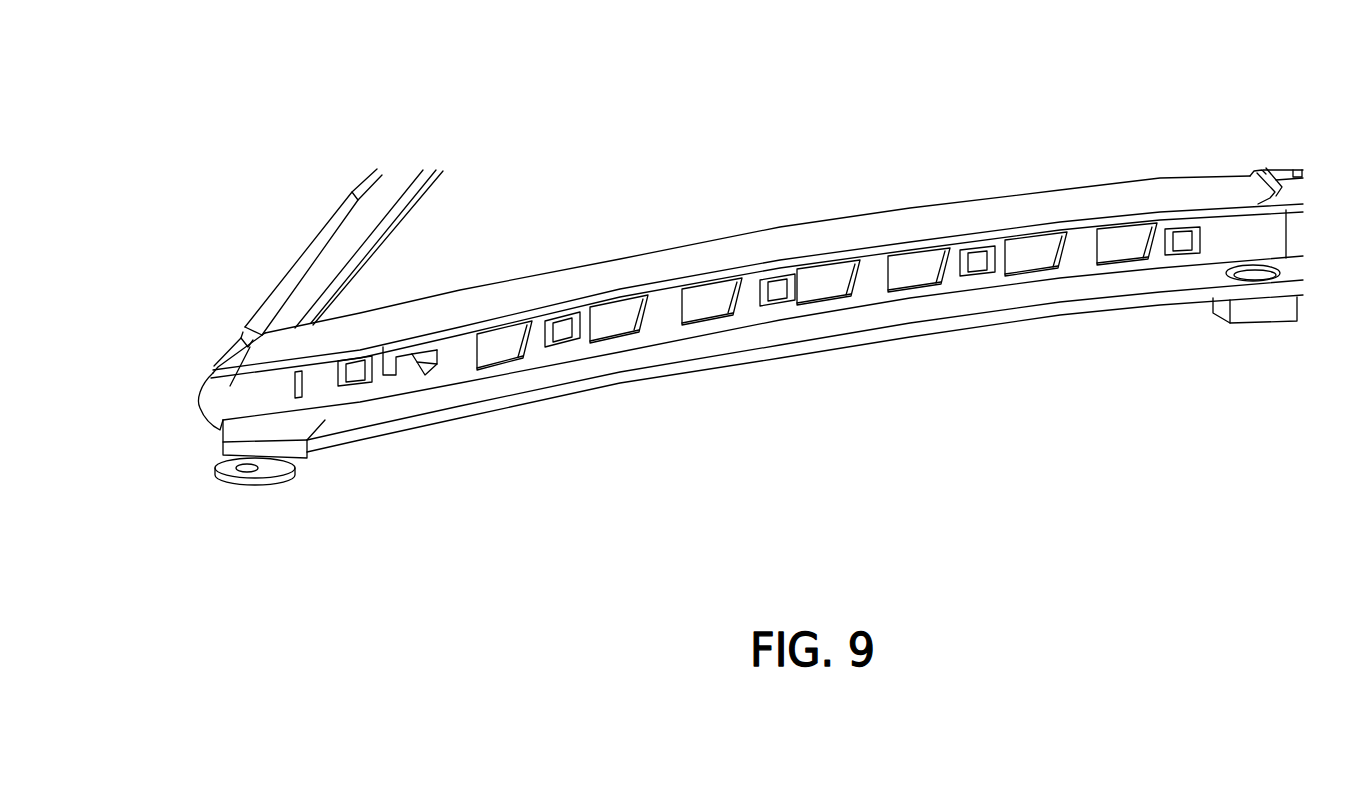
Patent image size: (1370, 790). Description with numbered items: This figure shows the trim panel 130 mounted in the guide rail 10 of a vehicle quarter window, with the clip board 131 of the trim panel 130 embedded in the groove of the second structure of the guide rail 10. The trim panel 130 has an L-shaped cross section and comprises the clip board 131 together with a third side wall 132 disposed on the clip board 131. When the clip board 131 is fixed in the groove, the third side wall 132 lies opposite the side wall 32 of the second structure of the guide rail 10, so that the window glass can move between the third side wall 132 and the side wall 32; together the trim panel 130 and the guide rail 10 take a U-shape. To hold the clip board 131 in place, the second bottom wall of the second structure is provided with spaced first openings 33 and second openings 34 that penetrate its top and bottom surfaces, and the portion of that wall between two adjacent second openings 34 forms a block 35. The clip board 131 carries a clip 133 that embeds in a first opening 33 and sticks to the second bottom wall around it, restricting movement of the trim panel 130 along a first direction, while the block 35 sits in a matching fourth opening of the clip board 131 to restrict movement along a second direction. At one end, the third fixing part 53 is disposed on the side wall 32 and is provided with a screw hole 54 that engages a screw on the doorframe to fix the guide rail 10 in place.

The guide rail 10 is at (178, 445).
The trim panel 130 is at (693, 151).
The third side wall 132 is at (607, 270).
The clip board 131 is at (385, 354).
The block 35 is at (421, 358).
The second opening 34 is at (428, 372).
The side wall 32 is at (512, 385).
The first opening 33 is at (338, 386).
The clip 133 is at (355, 384).
The third fixing part 53 is at (262, 476).
The screw hole 54 is at (247, 469).